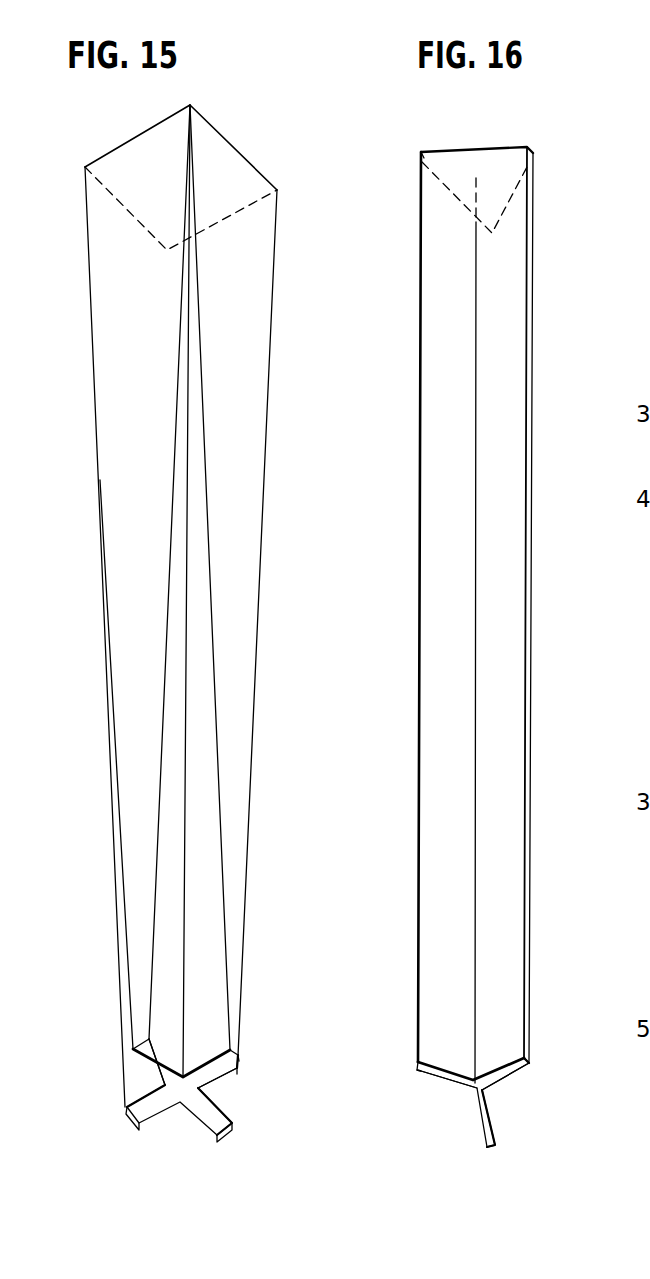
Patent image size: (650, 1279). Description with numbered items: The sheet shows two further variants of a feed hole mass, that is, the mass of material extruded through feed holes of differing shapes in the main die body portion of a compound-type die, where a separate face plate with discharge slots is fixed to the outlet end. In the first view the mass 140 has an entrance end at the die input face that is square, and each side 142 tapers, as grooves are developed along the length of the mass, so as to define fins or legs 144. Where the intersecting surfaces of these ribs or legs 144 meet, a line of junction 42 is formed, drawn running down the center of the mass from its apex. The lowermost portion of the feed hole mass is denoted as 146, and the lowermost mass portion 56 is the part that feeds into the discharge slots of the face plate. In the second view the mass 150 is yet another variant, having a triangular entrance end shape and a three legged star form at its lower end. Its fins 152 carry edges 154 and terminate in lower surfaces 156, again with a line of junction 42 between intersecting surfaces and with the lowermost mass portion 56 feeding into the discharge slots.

In FIG. 15, the feed hole mass 140 is at (106, 145).
In FIG. 15, the side 142 is at (252, 507).
In FIG. 15, the line of junction 42 is at (185, 812).
In FIG. 16, the line of junction 42 is at (475, 843).
In FIG. 15, the fins or legs 144 is at (163, 992).
In FIG. 15, the lowermost portion 146 is at (220, 1070).
In FIG. 15, the lowermost mass portion 56 is at (210, 1055).
In FIG. 16, the lowermost mass portion 56 is at (440, 1068).
In FIG. 16, the feed hole mass 150 is at (436, 138).
In FIG. 16, the fins 152 is at (417, 455).
In FIG. 16, the edges 154 is at (530, 665).
In FIG. 16, the lower surfaces 156 is at (513, 1070).